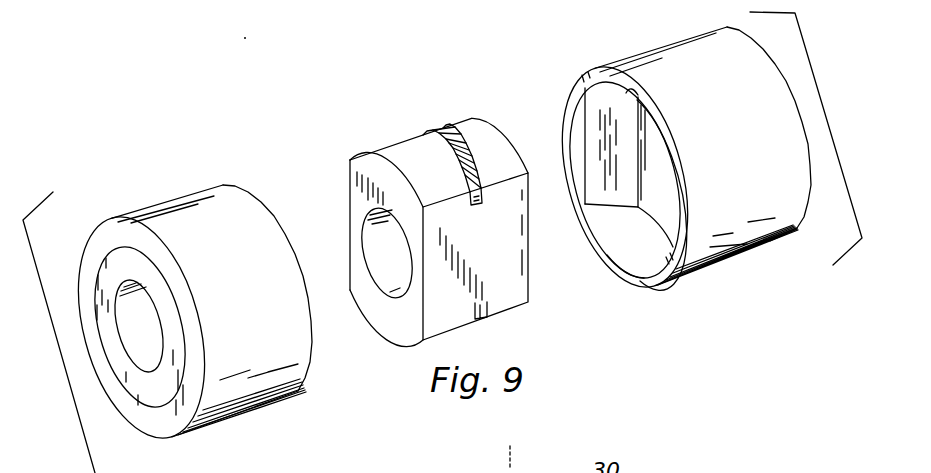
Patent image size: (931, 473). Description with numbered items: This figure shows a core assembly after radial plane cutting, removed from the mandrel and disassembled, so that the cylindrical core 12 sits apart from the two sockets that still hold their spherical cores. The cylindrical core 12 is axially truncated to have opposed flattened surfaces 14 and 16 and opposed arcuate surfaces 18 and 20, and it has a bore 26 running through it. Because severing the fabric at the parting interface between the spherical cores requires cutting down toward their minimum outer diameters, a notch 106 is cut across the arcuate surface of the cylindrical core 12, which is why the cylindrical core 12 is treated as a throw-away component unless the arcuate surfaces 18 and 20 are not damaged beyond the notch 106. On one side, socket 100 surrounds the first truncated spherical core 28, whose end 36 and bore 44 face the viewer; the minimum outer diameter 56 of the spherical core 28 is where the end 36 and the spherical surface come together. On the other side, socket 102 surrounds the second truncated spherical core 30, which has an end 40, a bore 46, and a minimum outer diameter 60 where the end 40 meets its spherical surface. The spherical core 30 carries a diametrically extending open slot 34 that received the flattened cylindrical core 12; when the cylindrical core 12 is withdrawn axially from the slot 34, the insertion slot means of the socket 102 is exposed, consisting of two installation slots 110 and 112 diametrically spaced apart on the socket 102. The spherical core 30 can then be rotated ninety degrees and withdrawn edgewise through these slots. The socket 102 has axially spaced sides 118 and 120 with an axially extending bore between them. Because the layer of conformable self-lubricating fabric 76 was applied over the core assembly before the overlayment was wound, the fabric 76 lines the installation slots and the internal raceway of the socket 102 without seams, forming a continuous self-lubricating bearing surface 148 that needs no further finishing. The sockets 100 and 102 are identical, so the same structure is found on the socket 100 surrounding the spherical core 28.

The socket 100 is at (183, 308).
The truncated spherical core 28 is at (115, 254).
The end of spherical core 36 is at (160, 380).
The bore of spherical core 44 is at (143, 305).
The minimum outer diameter 56 is at (173, 416).
The cylindrical core 12 is at (432, 220).
The flattened surface 14 is at (350, 184).
The flattened surface 16 is at (498, 265).
The arcuate surface 18 is at (413, 137).
The arcuate surface 20 is at (378, 332).
The bore 26 is at (372, 236).
The notch 106 is at (455, 131).
The socket 102 is at (683, 167).
The truncated spherical core 30 is at (585, 100).
The minimum outer diameter 60 is at (585, 128).
The end of spherical core 40 is at (585, 145).
The bore of spherical core 46 is at (663, 142).
The installation slot 110 is at (640, 95).
The open slot 34 is at (603, 186).
The installation slot 112 is at (636, 231).
The self-lubricating fabric 76 is at (638, 255).
The self-lubricating bearing surface 148 is at (651, 252).
The side of socket 118 is at (674, 277).
The side of socket 120 is at (782, 223).